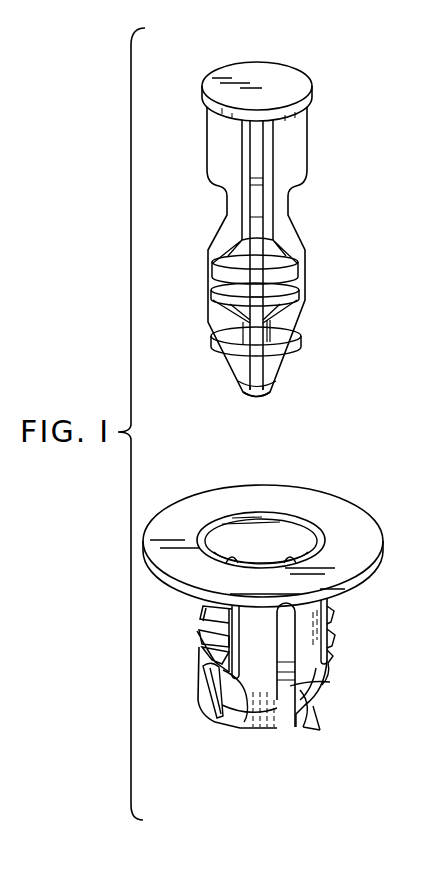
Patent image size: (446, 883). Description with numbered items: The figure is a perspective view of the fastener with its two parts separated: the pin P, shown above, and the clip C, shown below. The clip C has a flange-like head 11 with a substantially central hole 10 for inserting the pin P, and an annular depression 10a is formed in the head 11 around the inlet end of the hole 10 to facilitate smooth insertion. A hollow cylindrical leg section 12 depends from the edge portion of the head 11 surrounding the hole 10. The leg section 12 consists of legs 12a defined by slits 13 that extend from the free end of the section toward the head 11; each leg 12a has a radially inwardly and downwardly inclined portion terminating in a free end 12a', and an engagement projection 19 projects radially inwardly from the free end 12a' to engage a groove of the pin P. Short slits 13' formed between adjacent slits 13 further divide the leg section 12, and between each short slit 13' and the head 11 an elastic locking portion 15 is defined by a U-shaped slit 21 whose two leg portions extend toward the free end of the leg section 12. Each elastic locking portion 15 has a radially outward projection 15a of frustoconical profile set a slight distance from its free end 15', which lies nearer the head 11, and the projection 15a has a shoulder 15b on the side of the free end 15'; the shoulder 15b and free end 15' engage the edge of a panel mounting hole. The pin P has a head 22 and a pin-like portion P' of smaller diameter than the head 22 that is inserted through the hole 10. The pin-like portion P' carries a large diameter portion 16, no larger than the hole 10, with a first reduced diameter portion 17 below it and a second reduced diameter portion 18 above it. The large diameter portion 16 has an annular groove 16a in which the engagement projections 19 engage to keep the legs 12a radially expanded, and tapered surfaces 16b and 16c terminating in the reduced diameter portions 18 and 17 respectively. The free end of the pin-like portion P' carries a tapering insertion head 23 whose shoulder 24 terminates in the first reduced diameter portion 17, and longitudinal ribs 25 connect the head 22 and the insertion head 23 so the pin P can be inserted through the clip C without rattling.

The pin P is at (267, 222).
The pin-like portion P' is at (284, 405).
The clip C is at (352, 498).
The head 22 is at (315, 92).
The ribs 25 is at (207, 147).
The second reduced diameter portion 18 is at (266, 206).
The large diameter portion 16 is at (296, 278).
The annular groove 16a is at (298, 304).
The tapered surface 16b is at (293, 262).
The tapered surface 16c is at (283, 330).
The first reduced diameter portion 17 is at (216, 343).
The insertion head 23 is at (231, 372).
The shoulder 24 is at (289, 343).
The hole 10 is at (283, 538).
The annular depression 10a is at (248, 518).
The flange-like head 11 is at (374, 537).
The leg section 12 is at (225, 690).
The legs 12a is at (342, 712).
The free end 12a' is at (321, 758).
The slits 13 is at (254, 611).
The short slits 13' is at (204, 720).
The elastic locking portion 15 is at (271, 659).
The free end 15' is at (278, 601).
The projection 15a is at (210, 655).
The shoulder 15b is at (205, 637).
The engagement projection 19 is at (290, 712).
The U-shaped slit 21 is at (258, 720).